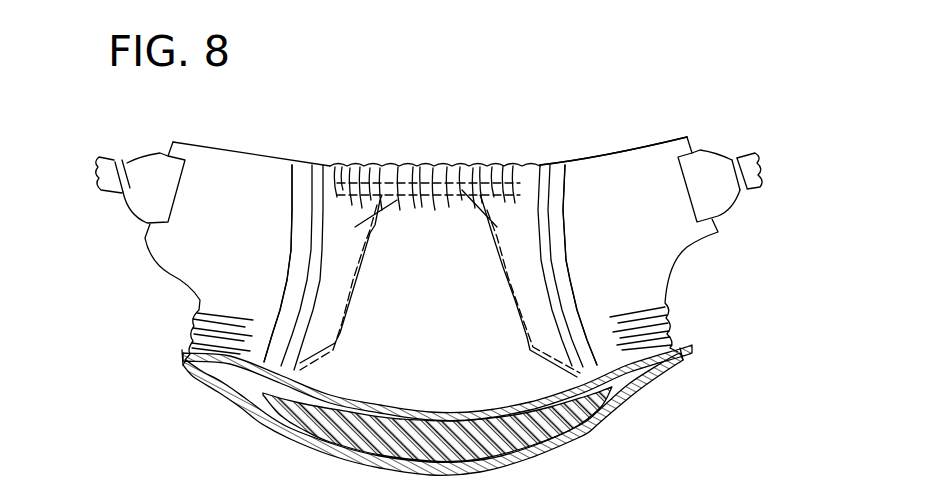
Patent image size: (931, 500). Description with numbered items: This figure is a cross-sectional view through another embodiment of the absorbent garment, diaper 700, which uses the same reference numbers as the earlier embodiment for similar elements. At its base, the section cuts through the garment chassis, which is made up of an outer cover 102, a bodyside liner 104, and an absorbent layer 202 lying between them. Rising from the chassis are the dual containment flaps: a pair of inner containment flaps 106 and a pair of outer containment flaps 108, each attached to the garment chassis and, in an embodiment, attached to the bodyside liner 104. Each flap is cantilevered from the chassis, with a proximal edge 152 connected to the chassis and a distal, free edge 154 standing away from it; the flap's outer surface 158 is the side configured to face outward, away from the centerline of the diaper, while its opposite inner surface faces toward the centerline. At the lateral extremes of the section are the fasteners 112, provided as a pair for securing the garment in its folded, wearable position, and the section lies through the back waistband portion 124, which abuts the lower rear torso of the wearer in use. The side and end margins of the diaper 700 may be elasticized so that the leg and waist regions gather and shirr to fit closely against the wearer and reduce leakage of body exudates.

The diaper 700 is at (604, 66).
The fasteners 112 is at (125, 160).
The back waistband portion 124 is at (635, 162).
The distal, free edge 154 is at (325, 185).
The outer surface 158 is at (527, 221).
The proximal edge 152 is at (320, 230).
The outer containment flaps 108 is at (293, 168).
The inner containment flaps 106 is at (395, 207).
The bodyside liner 104 is at (368, 400).
The outer cover 102 is at (618, 397).
The absorbent layer 202 is at (545, 432).